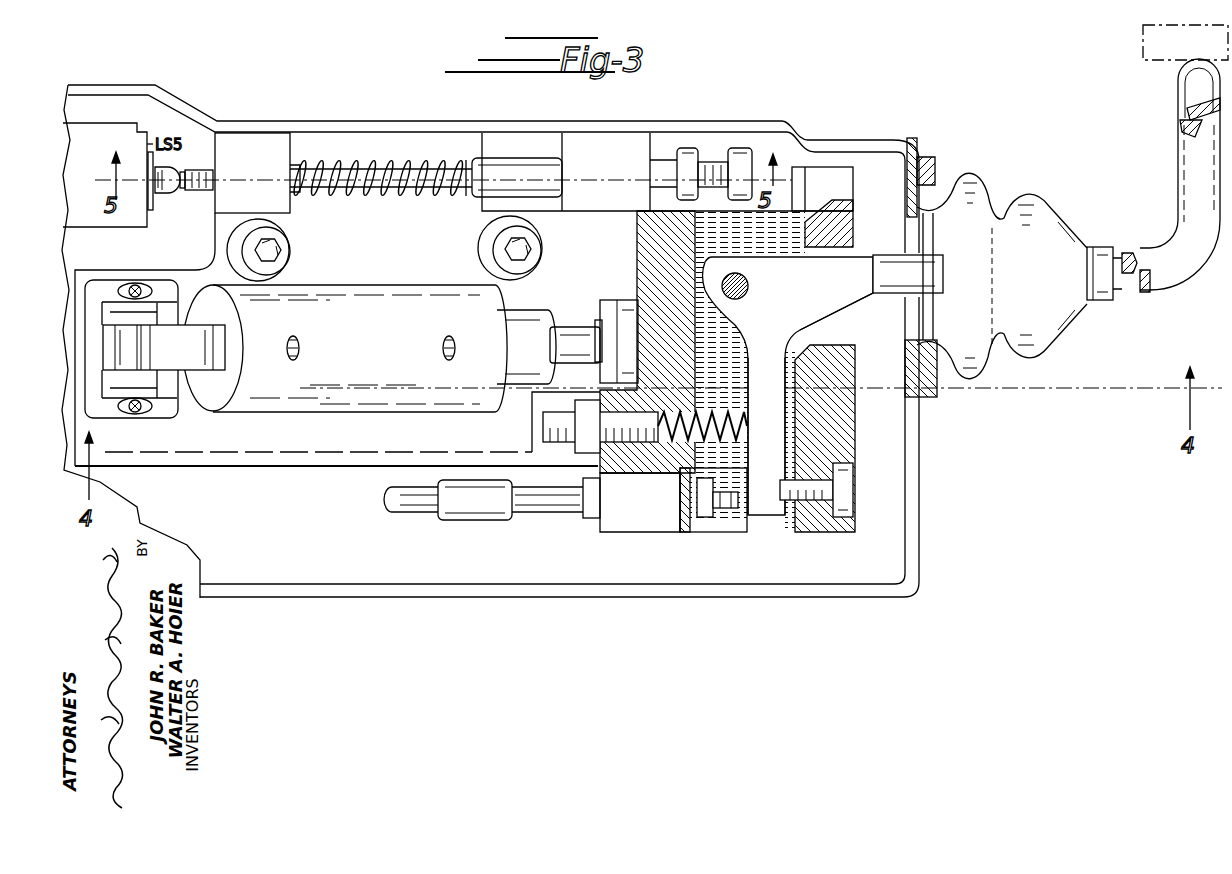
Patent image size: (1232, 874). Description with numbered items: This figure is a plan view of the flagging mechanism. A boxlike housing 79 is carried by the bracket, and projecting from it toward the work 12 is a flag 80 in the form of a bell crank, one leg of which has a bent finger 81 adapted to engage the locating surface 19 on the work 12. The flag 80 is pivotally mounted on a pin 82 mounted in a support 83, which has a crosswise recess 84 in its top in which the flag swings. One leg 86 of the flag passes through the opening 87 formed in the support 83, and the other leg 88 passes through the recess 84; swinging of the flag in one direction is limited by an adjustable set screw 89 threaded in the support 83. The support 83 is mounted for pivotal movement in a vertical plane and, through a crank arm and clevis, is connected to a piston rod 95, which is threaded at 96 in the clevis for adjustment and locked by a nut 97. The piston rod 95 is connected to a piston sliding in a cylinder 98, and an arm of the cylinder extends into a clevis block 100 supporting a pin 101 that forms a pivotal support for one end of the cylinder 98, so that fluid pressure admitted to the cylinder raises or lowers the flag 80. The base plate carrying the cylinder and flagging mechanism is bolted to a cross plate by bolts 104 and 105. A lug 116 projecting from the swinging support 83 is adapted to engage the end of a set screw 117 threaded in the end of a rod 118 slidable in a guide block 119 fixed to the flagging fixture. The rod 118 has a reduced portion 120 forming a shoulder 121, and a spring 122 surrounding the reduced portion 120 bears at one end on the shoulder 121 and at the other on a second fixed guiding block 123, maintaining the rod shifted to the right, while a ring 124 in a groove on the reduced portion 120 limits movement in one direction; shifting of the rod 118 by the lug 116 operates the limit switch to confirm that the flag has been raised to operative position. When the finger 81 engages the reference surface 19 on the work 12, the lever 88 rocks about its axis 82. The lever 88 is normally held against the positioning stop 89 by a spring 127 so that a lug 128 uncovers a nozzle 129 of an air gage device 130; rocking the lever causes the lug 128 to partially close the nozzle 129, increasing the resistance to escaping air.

The work 12 is at (1145, 60).
The locating surface 19 is at (1170, 63).
The housing 79 is at (917, 432).
The flag 80 is at (1118, 260).
The bent finger 81 is at (1188, 182).
The pin 82 is at (742, 281).
The support 83 is at (860, 362).
The recess 84 is at (728, 337).
The leg 86 is at (862, 292).
The opening 87 is at (866, 330).
The leg 88 is at (752, 364).
The set screw 89 is at (850, 488).
The piston rod 95 is at (567, 357).
The threaded portion 96 is at (600, 322).
The nut 97 is at (619, 308).
The cylinder 98 is at (368, 292).
The clevis block 100 is at (108, 414).
The pin 101 is at (178, 412).
The bolt 104 is at (284, 239).
The bolt 105 is at (536, 243).
The lug 116 is at (840, 174).
The set screw 117 is at (733, 152).
The rod 118 is at (500, 170).
The guide block 119 is at (596, 143).
The reduced portion 120 is at (398, 167).
The shoulder 121 is at (468, 163).
The spring 122 is at (336, 167).
The second fixed guiding block 123 is at (256, 142).
The ring 124 is at (213, 194).
The spring 127 is at (710, 438).
The lug 128 is at (742, 518).
The nozzle 129 is at (727, 518).
The air gage device 130 is at (593, 515).